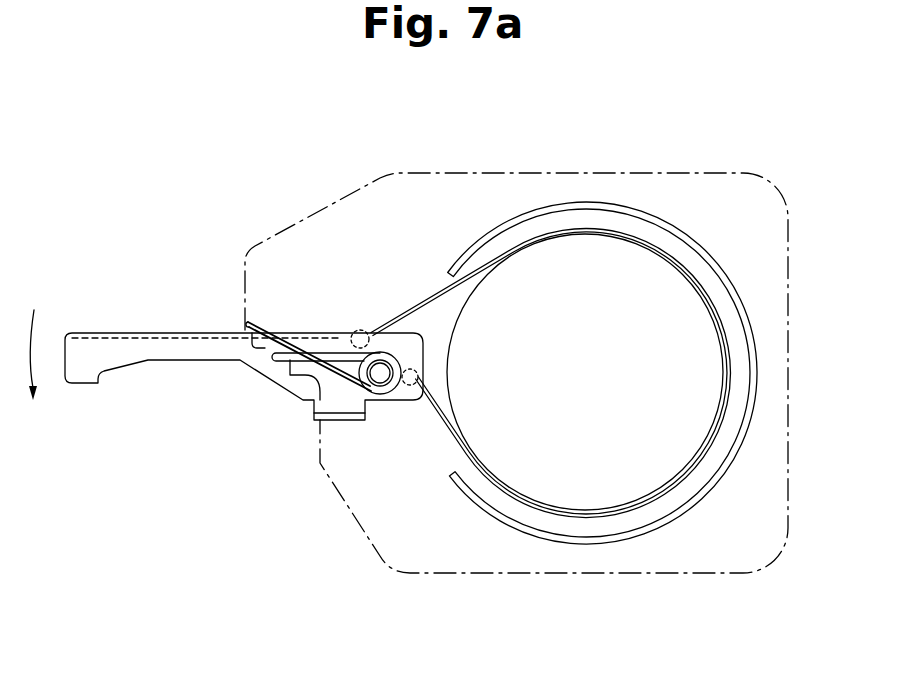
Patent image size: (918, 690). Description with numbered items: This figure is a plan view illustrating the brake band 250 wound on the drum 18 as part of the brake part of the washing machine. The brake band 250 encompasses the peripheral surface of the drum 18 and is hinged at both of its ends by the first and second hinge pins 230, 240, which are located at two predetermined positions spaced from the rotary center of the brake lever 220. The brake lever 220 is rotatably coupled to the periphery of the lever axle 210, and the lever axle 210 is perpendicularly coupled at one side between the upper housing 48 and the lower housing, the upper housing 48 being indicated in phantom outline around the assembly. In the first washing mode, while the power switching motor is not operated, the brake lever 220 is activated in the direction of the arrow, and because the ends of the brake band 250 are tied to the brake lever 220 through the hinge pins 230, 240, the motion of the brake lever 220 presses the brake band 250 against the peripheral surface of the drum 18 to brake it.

The drum 18 is at (665, 388).
The upper housing 48 is at (690, 186).
The lever axle 210 is at (377, 330).
The brake lever 220 is at (97, 345).
The first hinge pin 230 is at (342, 343).
The second hinge pin 240 is at (380, 367).
The brake band 250 is at (452, 478).